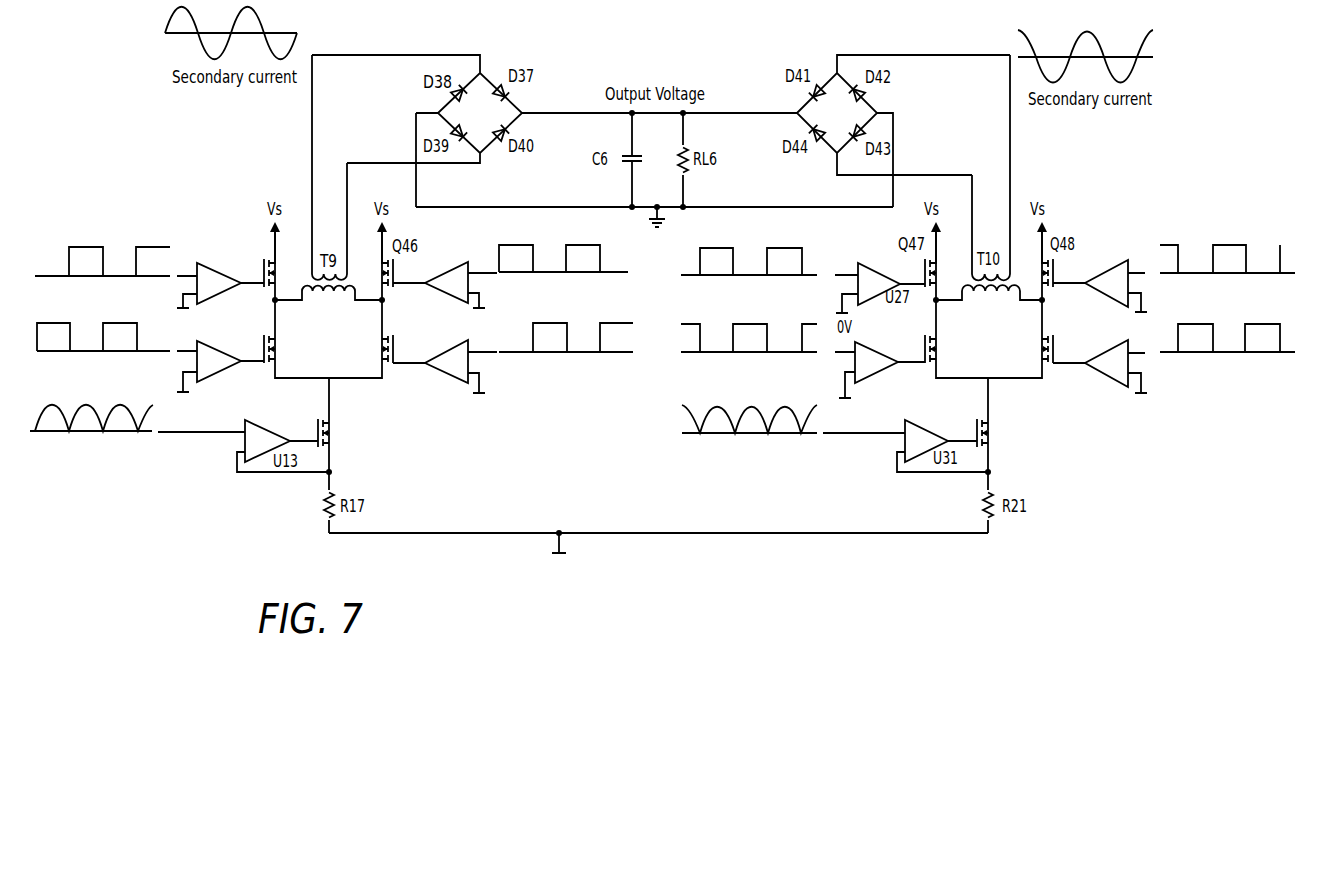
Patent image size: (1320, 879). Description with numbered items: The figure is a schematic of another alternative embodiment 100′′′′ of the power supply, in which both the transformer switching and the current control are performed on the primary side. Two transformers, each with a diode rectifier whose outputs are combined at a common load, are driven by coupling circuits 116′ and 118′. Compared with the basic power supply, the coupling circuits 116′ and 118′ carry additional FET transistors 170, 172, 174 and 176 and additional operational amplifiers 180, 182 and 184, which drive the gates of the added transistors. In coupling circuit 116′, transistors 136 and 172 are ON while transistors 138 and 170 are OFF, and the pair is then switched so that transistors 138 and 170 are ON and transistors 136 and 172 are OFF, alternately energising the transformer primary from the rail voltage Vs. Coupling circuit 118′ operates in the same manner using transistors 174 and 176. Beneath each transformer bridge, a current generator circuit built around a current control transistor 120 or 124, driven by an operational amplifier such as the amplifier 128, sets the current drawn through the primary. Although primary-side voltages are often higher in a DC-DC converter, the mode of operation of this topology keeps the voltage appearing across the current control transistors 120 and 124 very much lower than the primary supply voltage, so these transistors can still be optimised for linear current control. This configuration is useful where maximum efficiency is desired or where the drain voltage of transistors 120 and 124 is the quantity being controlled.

The power supply 100′′′′ is at (831, 558).
The coupling circuit 116′ is at (203, 279).
The coupling circuit 118′ is at (1112, 275).
The FET transistor 136 is at (263, 272).
The FET transistor 138 is at (452, 282).
The FET transistor 170 is at (263, 348).
The FET transistor 172 is at (396, 350).
The FET transistor 174 is at (924, 350).
The FET transistor 176 is at (1058, 350).
The current control transistor 120 is at (316, 433).
The current control transistor 124 is at (980, 428).
The operational amplifier 128 is at (208, 369).
The operational amplifier 180 is at (449, 372).
The operational amplifier 182 is at (856, 362).
The operational amplifier 184 is at (1115, 361).